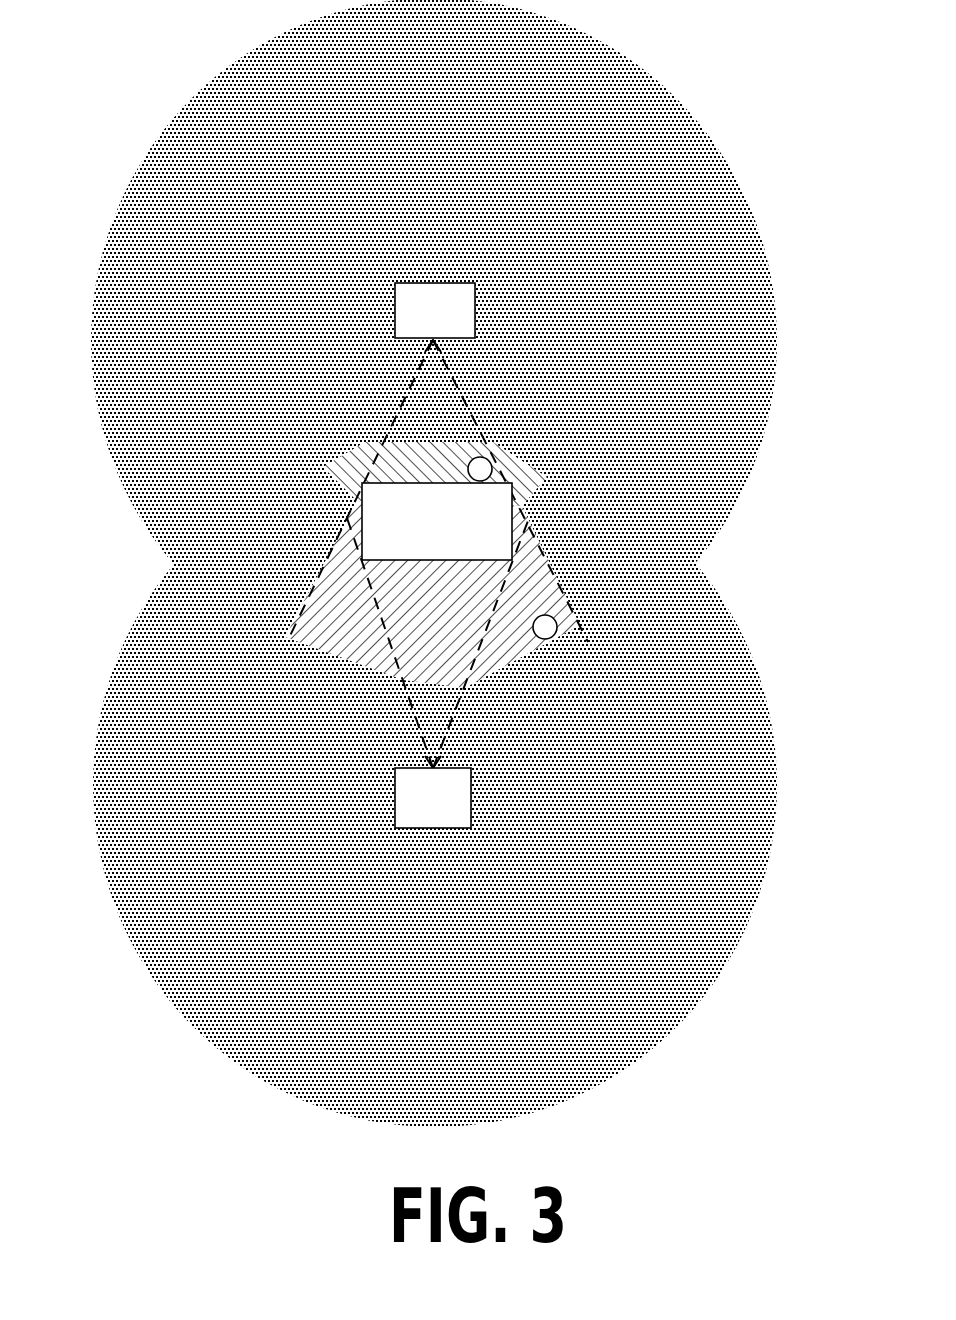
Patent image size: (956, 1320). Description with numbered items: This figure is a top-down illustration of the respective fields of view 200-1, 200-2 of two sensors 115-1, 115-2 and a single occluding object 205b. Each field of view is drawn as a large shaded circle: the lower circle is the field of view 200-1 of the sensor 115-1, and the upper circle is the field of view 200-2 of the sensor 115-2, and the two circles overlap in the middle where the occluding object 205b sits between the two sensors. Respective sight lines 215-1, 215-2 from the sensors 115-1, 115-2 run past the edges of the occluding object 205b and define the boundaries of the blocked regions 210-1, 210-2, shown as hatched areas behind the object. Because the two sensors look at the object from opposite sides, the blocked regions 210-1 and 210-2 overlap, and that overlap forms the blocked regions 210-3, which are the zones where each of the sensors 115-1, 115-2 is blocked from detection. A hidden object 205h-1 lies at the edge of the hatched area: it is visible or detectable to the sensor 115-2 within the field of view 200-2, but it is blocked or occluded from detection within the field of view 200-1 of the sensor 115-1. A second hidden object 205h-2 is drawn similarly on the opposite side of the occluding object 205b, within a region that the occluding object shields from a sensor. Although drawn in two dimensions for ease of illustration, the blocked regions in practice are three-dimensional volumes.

The field of view 200-1 is at (435, 785).
The field of view 200-2 is at (434, 342).
The sensor 115-1 is at (433, 798).
The sensor 115-2 is at (435, 310).
The occluding object 205b is at (437, 521).
The hidden object 205h-1 is at (482, 457).
The hidden object 205h-2 is at (548, 616).
The blocked region 210-1 is at (359, 449).
The blocked region 210-2 is at (317, 661).
The blocked region 210-3 is at (343, 520).
The sight line 215-1 is at (323, 467).
The sight line 215-2 is at (285, 637).